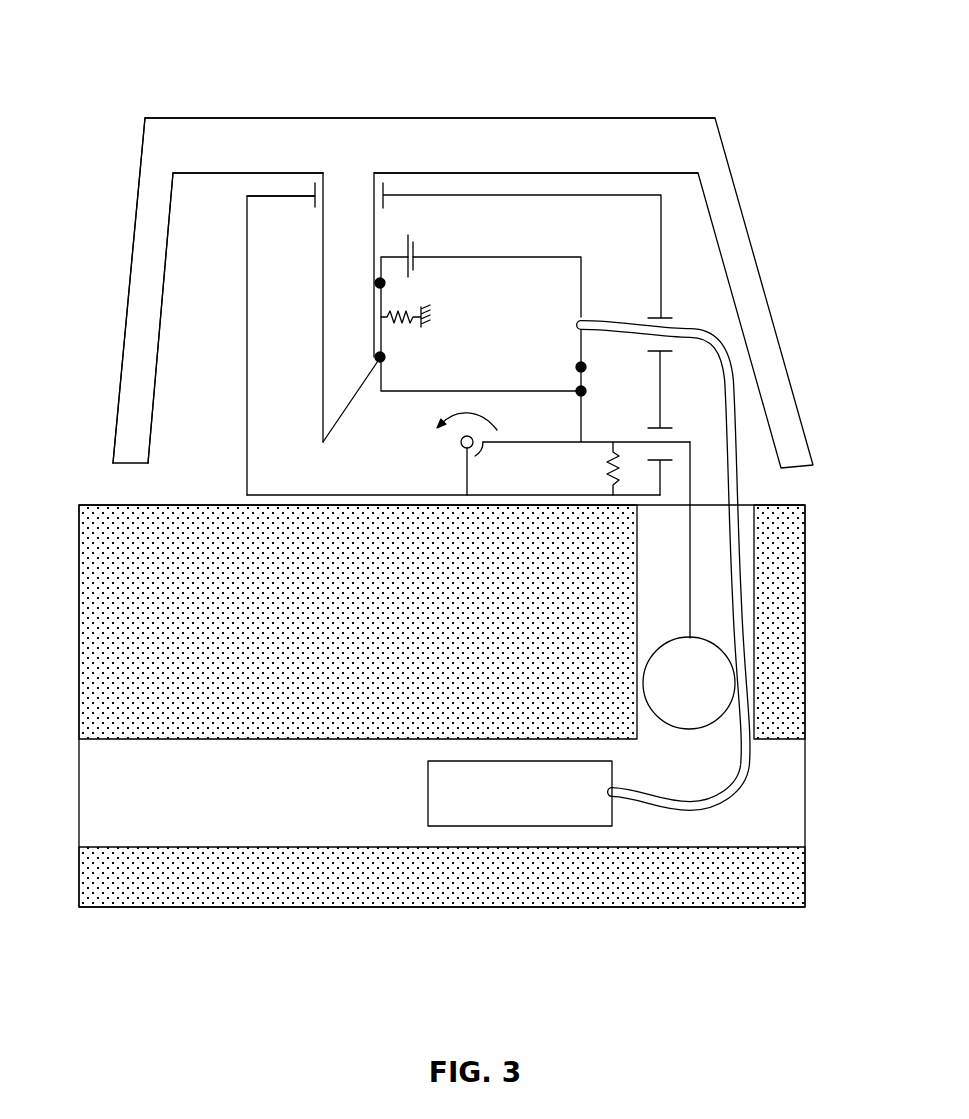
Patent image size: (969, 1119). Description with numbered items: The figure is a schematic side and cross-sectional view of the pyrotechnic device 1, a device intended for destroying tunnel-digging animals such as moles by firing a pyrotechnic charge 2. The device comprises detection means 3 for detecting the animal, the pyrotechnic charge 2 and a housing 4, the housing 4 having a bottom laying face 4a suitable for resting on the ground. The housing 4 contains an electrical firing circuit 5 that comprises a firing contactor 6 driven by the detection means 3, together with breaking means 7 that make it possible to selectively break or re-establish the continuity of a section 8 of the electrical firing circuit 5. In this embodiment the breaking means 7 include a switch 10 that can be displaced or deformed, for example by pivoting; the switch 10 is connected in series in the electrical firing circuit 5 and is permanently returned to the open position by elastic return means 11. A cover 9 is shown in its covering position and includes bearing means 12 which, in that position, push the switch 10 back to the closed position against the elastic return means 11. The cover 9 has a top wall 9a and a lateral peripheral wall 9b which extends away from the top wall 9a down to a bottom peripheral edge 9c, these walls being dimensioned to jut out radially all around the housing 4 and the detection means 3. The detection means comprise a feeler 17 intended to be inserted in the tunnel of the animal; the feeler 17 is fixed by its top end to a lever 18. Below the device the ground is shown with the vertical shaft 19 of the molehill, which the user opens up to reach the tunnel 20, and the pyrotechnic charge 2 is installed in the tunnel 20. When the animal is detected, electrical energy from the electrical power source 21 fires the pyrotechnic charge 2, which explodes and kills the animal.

The pyrotechnic device 1 is at (429, 242).
The pyrotechnic charge 2 is at (438, 797).
The detection means 3 is at (668, 553).
The housing 4 is at (415, 336).
The bottom laying face 4a is at (262, 495).
The electrical firing circuit 5 is at (454, 323).
The firing contactor 6 is at (571, 383).
The breaking means 7 is at (399, 349).
The section of electrical firing circuit 8 is at (396, 295).
The cover 9 is at (429, 242).
The top wall 9a is at (465, 130).
The lateral peripheral wall 9b is at (132, 365).
The bottom peripheral edge 9c is at (115, 462).
The switch 10 is at (381, 334).
The elastic return means 11 is at (419, 313).
The bearing means 12 is at (327, 315).
The feeler 17 is at (689, 590).
The lever 18 is at (668, 441).
The vertical shaft 19 is at (689, 649).
The tunnel 20 is at (442, 706).
The electrical power source 21 is at (414, 250).